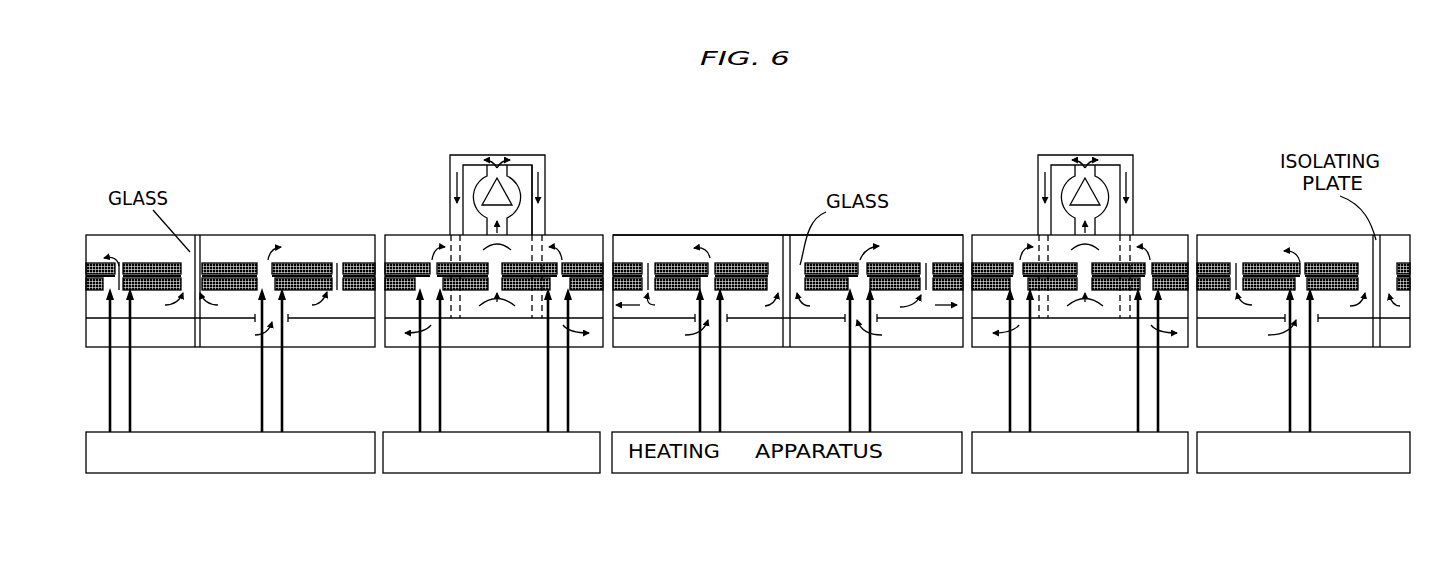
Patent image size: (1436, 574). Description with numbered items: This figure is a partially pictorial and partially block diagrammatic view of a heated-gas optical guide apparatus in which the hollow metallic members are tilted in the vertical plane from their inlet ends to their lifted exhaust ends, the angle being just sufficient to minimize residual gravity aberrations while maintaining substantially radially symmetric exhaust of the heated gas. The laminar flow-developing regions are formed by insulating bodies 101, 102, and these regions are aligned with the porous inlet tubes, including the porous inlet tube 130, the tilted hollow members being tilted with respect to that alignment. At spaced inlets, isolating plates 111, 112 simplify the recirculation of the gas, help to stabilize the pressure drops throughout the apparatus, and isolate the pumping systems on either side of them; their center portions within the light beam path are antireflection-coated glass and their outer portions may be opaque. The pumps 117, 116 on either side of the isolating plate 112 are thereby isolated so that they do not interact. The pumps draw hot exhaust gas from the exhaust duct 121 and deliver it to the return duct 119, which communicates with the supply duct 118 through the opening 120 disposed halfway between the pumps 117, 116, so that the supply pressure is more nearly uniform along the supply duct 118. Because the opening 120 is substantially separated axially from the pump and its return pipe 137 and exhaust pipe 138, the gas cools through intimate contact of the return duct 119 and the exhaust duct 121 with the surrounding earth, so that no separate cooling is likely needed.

The insulating body 101 is at (247, 250).
The insulating body 102 is at (305, 250).
The isolating plate 111 is at (195, 247).
The isolating plate 112 is at (786, 240).
The pump 116 is at (1083, 155).
The pump 117 is at (497, 156).
The supply duct 118 is at (490, 312).
The return duct 119 is at (660, 333).
The opening 120 is at (823, 328).
The exhaust duct 121 is at (650, 248).
The porous inlet tube 130 is at (340, 250).
The return pipe 137 is at (450, 166).
The exhaust pipe 138 is at (508, 226).